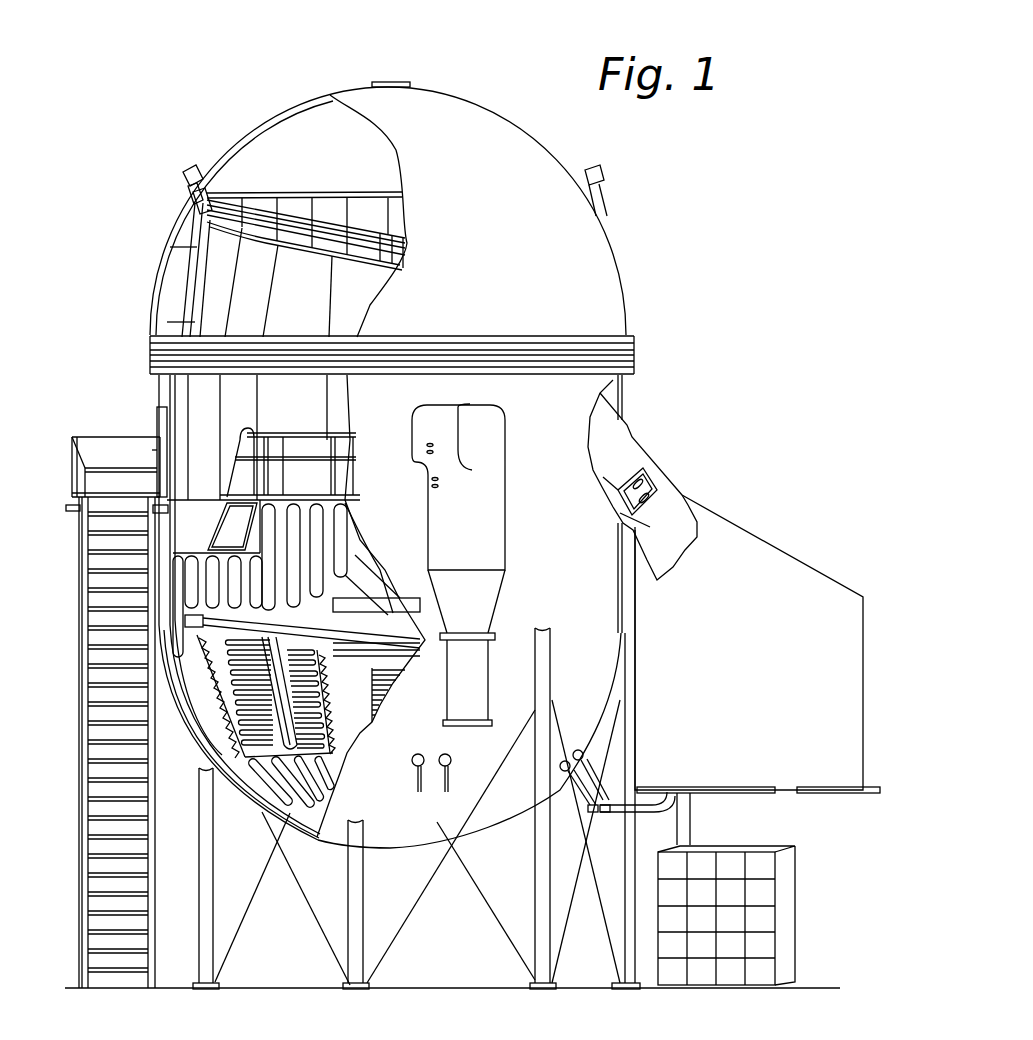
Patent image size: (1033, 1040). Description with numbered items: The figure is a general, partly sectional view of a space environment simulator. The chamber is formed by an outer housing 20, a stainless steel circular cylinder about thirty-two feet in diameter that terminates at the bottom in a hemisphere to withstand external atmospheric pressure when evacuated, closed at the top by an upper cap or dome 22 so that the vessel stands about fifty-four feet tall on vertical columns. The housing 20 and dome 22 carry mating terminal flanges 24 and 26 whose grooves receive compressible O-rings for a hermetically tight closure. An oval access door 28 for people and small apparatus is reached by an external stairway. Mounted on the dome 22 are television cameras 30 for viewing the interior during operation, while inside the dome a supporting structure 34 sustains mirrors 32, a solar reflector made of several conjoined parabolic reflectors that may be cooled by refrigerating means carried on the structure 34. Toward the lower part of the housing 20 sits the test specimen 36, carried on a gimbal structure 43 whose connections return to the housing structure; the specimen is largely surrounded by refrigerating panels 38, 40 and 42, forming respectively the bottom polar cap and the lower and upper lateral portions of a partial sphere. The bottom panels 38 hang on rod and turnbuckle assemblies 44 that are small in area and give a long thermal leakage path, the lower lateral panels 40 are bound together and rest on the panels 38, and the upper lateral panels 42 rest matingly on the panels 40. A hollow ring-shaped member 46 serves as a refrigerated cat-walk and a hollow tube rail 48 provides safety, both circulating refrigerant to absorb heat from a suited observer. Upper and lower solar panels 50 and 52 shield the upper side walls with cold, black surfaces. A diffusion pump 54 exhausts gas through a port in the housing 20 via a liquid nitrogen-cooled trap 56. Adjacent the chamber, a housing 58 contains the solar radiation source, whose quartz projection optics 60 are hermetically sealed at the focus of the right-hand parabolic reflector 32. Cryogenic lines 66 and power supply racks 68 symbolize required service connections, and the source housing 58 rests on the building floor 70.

The outer housing 20 is at (406, 537).
The upper cap or dome 22 is at (490, 190).
The terminal flange of housing 24 is at (150, 370).
The terminal flange of cap 26 is at (150, 340).
The access door 28 is at (157, 418).
The television cameras 30 is at (183, 176).
The mirrors 32 is at (323, 248).
The supporting structure 34 is at (332, 192).
The test specimen 36 is at (400, 627).
The bottom refrigerating panels 38 is at (302, 769).
The lower lateral refrigerating panels 40 is at (243, 687).
The upper lateral refrigerating panels 42 is at (318, 513).
The gimbal structure 43 is at (262, 625).
The rod and turnbuckle assemblies 44 is at (217, 730).
The hollow ring-shaped member 46 is at (232, 523).
The hollow tube rail 48 is at (281, 433).
The upper solar panel 50 is at (260, 305).
The lower solar panel 52 is at (230, 395).
The diffusion pump 54 is at (458, 702).
The liquid nitrogen-cooled trap 56 is at (473, 537).
The housing 58 is at (768, 685).
The projection optics 60 is at (648, 482).
The cryogenic lines 66 is at (643, 812).
The power supply racks 68 is at (785, 920).
The floor 70 is at (867, 793).